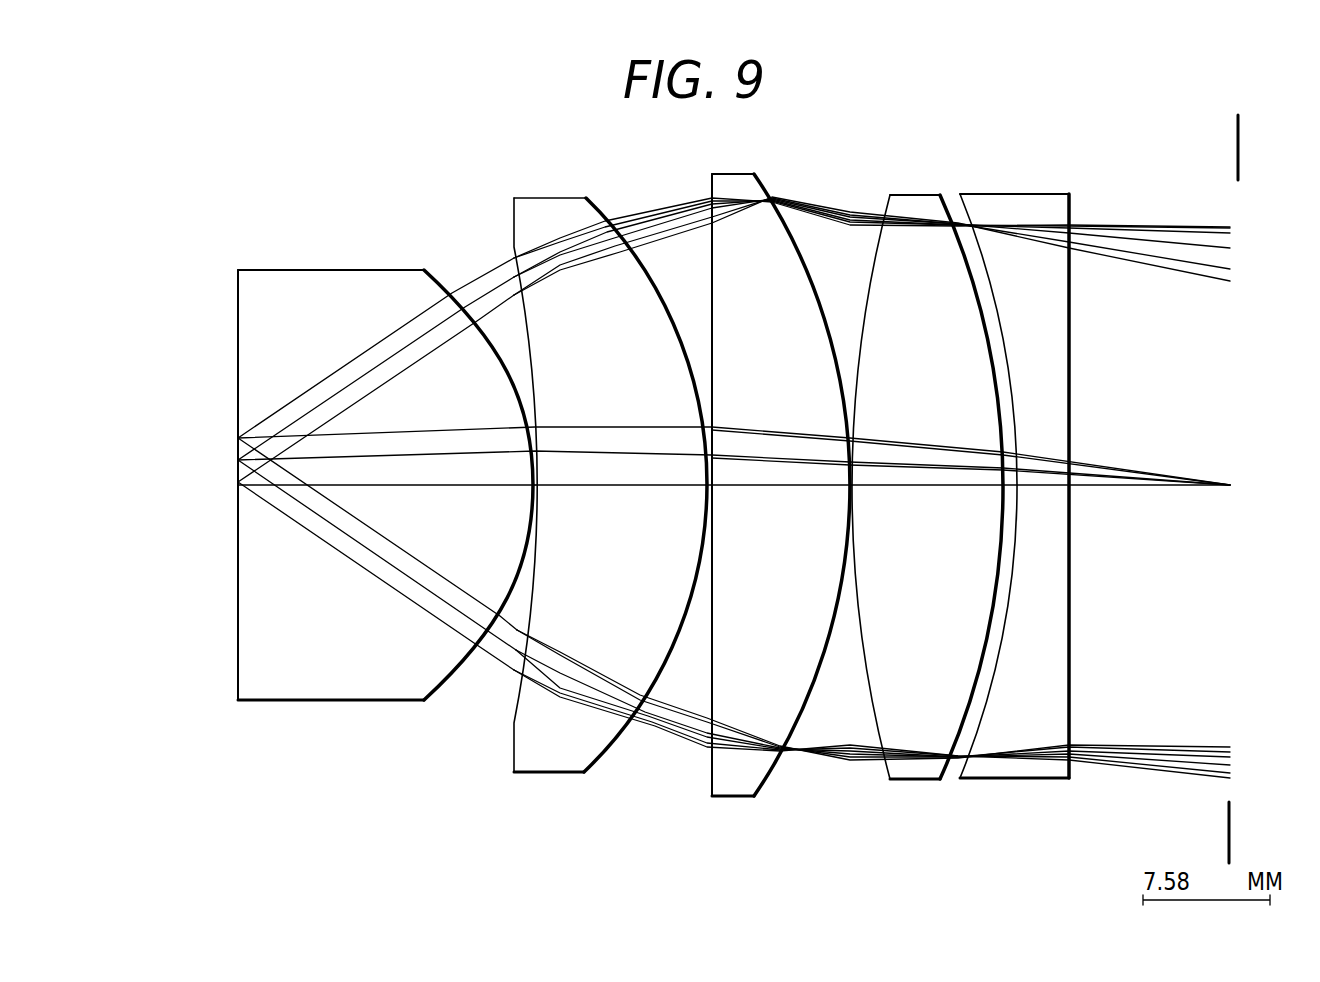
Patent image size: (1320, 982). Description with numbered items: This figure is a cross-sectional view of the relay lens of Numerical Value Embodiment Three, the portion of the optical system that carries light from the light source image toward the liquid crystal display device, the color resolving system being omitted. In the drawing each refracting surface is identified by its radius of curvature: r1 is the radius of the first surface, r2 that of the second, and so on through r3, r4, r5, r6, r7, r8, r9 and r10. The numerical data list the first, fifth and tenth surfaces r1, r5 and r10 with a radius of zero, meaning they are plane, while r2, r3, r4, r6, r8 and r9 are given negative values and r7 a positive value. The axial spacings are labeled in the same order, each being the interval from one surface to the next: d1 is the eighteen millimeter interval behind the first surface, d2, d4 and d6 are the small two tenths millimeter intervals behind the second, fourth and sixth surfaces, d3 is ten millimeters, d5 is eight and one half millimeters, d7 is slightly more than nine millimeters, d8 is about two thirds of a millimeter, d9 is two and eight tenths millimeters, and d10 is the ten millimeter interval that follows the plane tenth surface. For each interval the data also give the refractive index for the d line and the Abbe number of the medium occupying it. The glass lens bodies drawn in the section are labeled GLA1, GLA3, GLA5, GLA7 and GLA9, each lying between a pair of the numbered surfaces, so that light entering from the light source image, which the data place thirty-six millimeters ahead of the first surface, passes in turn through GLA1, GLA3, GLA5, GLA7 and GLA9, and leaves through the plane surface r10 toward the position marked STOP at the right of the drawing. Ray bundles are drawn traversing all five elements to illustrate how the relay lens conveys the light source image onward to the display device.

The radius of curvature of the first surface r1 is at (238, 298).
The radius of curvature of the second surface r2 is at (443, 270).
The radius of curvature of the third surface r3 is at (513, 248).
The radius of curvature of the fourth surface r4 is at (592, 203).
The radius of curvature of the fifth surface r5 is at (712, 190).
The radius of curvature of the sixth surface r6 is at (760, 195).
The radius of curvature of the seventh surface r7 is at (883, 203).
The radius of curvature of the eighth surface r8 is at (950, 193).
The radius of curvature of the ninth surface r9 is at (972, 252).
The radius of curvature of the tenth surface r10 is at (1071, 208).
The interval from the first surface to the second surface d1 is at (337, 485).
The interval from the second surface to the third surface d2 is at (535, 490).
The interval from the third surface to the fourth surface d3 is at (630, 487).
The interval from the fourth surface to the fifth surface d4 is at (711, 490).
The interval from the fifth surface to the sixth surface d5 is at (800, 488).
The interval from the sixth surface to the seventh surface d6 is at (857, 488).
The interval from the seventh surface to the eighth surface d7 is at (936, 488).
The interval from the eighth surface to the ninth surface d8 is at (1012, 488).
The interval from the ninth surface to the tenth surface d9 is at (1045, 488).
The interval from the tenth surface to the eleventh surface d10 is at (1137, 488).
The first lens element GLA1 is at (331, 485).
The second lens element GLA3 is at (550, 485).
The third lens element GLA5 is at (747, 485).
The fourth lens element GLA7 is at (917, 487).
The fifth lens element GLA9 is at (1014, 486).
The aperture stop STOP is at (1271, 147).